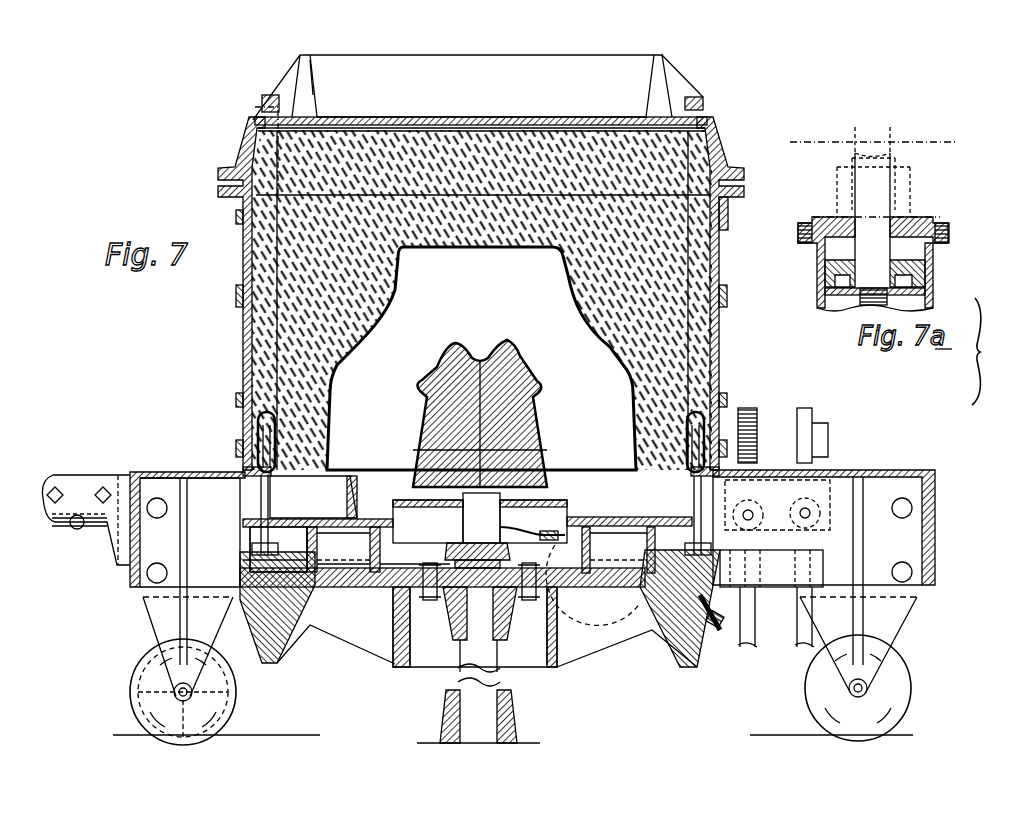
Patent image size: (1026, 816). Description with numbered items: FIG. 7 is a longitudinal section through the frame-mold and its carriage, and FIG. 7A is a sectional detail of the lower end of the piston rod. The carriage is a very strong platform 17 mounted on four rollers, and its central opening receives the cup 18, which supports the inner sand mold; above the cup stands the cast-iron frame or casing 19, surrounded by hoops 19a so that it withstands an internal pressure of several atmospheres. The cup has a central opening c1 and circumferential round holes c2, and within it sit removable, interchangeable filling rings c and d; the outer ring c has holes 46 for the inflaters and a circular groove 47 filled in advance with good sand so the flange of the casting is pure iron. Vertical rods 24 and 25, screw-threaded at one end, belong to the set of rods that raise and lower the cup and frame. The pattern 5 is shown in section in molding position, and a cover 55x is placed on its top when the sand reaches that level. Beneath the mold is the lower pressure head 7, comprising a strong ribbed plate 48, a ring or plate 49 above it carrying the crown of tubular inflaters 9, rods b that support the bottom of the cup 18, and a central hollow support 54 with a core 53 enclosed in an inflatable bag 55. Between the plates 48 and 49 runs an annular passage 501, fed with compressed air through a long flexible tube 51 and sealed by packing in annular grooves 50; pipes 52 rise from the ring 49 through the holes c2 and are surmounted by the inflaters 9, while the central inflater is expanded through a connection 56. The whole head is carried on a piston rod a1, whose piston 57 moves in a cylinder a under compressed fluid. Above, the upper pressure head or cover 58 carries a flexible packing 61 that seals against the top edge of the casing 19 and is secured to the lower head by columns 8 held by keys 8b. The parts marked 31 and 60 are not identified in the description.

In FIG. 7, the pattern 5 is at (573, 303).
In FIG. 7, the lower pressure head 7 is at (487, 642).
In FIG. 7, the columns 8 is at (252, 242).
In FIG. 7, the keys 8b is at (262, 100).
In FIG. 7, the inflaters 9 is at (250, 432).
In FIG. 7, the platform 17 is at (157, 460).
In FIG. 7, the cup 18 is at (372, 541).
In FIG. 7, the frame 19 is at (243, 320).
In FIG. 7, the hoops 19a is at (236, 215).
In FIG. 7, the vertical rod 24 is at (812, 424).
In FIG. 7, the vertical rod 25 is at (777, 452).
In FIG. 7, the right carriage frame 31 is at (830, 475).
In FIG. 7, the holes 46 is at (246, 465).
In FIG. 7, the circular groove 47 is at (345, 496).
In FIG. 7, the plate 48 is at (393, 598).
In FIG. 7, the ring 49 is at (250, 552).
In FIG. 7, the annular grooves 50 is at (250, 560).
In FIG. 7, the annular passage 501 is at (245, 580).
In FIG. 7, the flexible tube 51 is at (718, 619).
In FIG. 7, the pipes 52 is at (260, 490).
In FIG. 7, the core 53 is at (545, 390).
In FIG. 7, the central support 54 is at (481, 518).
In FIG. 7, the inflatable bag 55 is at (560, 408).
In FIG. 7, the cover 55x is at (315, 93).
In FIG. 7, the connection 56 is at (593, 585).
In FIG. 7A, the piston 57 is at (928, 270).
In FIG. 7, the upper pressure head 58 is at (478, 87).
In FIG. 7, the flask lug 60 is at (729, 210).
In FIG. 7, the flexible packing 61 is at (722, 152).
In FIG. 7A, the cylinder a is at (933, 305).
In FIG. 7, the piston rod a1 is at (460, 700).
In FIG. 7A, the piston rod a1 is at (880, 227).
In FIG. 7, the rods b is at (481, 550).
In FIG. 7, the outer filling ring c is at (313, 497).
In FIG. 7, the central opening c1 is at (574, 512).
In FIG. 7, the circumferential holes c2 is at (468, 538).
In FIG. 7, the filling ring d is at (575, 524).